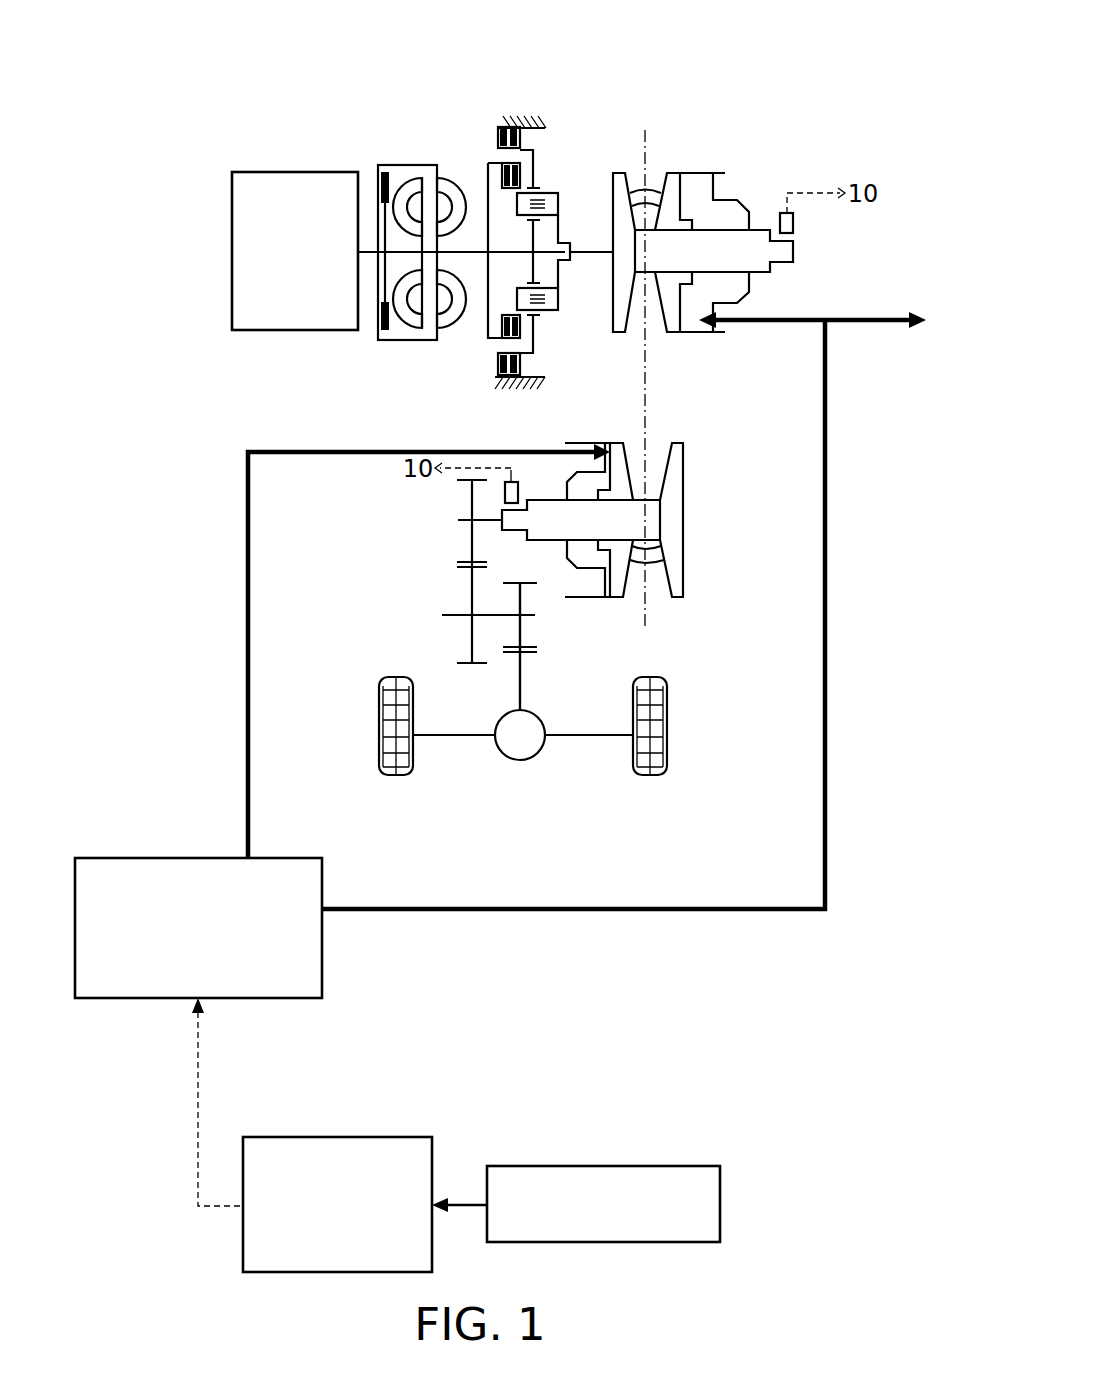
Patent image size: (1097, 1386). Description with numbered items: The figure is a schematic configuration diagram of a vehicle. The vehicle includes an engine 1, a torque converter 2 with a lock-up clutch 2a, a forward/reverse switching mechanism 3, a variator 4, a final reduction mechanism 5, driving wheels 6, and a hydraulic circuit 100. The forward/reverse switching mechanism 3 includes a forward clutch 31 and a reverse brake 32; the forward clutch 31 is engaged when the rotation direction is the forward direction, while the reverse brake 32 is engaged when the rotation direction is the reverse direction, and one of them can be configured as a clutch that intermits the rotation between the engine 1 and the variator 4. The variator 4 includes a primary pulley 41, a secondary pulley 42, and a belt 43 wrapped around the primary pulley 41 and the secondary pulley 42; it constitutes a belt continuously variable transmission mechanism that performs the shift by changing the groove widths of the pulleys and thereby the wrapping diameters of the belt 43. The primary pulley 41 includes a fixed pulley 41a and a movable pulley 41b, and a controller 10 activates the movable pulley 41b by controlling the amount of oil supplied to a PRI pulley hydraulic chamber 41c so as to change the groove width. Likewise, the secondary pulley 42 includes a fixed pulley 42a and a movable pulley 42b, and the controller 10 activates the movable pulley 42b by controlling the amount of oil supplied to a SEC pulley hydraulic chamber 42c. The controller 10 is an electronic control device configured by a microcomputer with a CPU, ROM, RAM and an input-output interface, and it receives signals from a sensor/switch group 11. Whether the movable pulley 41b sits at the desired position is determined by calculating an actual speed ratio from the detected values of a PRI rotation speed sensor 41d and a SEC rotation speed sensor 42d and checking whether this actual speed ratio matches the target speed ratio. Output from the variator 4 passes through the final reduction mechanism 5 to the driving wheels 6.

The engine 1 is at (283, 172).
The torque converter 2 is at (426, 138).
The lock-up clutch 2a is at (385, 170).
The forward/reverse switching mechanism 3 is at (511, 100).
The forward clutch 31 is at (497, 162).
The reverse brake 32 is at (525, 115).
The variator 4 is at (644, 100).
The primary pulley 41 is at (743, 207).
The fixed pulley 41a is at (618, 173).
The movable pulley 41b is at (675, 173).
The PRI pulley hydraulic chamber 41c is at (697, 192).
The PRI rotation speed sensor 41d is at (793, 223).
The secondary pulley 42 is at (687, 572).
The fixed pulley 42a is at (687, 457).
The movable pulley 42b is at (620, 600).
The SEC pulley hydraulic chamber 42c is at (593, 563).
The SEC rotation speed sensor 42d is at (518, 488).
The belt 43 is at (663, 565).
The final reduction mechanism 5 is at (426, 583).
The driving wheels 6 is at (380, 742).
The hydraulic circuit 100 is at (195, 858).
The controller 10 is at (332, 1137).
The sensor/switch group 11 is at (722, 1193).